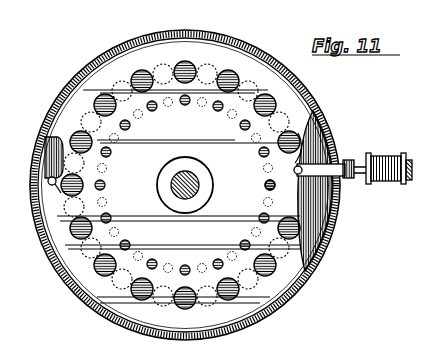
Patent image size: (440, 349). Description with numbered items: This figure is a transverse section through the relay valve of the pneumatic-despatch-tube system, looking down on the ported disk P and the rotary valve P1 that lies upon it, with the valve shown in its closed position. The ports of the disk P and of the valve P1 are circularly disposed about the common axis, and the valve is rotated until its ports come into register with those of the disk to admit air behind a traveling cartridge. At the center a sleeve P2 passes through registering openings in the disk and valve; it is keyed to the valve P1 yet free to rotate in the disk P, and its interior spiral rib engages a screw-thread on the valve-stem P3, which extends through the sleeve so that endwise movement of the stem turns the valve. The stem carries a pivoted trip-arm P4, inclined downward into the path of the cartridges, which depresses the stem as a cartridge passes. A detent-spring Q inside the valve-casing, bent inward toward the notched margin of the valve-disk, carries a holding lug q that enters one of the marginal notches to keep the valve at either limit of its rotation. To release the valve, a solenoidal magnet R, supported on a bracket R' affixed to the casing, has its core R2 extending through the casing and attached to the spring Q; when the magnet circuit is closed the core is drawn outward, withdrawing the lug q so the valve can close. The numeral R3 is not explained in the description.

The wheel rim R3 is at (52, 108).
The sleeve P2 is at (205, 165).
The valve P1 is at (185, 185).
The holding or detent lug q is at (298, 168).
The valve-stem P3 is at (283, 198).
The disk P is at (303, 167).
The core R2 is at (361, 159).
The solenoidal magnet R is at (386, 157).
The spring Q is at (305, 172).
The bracket R' is at (398, 183).
The trip-arm P4 is at (55, 175).